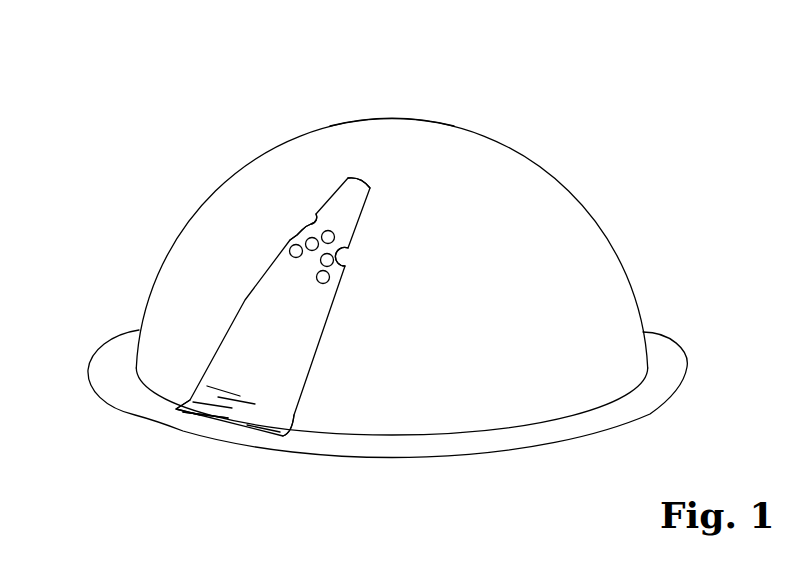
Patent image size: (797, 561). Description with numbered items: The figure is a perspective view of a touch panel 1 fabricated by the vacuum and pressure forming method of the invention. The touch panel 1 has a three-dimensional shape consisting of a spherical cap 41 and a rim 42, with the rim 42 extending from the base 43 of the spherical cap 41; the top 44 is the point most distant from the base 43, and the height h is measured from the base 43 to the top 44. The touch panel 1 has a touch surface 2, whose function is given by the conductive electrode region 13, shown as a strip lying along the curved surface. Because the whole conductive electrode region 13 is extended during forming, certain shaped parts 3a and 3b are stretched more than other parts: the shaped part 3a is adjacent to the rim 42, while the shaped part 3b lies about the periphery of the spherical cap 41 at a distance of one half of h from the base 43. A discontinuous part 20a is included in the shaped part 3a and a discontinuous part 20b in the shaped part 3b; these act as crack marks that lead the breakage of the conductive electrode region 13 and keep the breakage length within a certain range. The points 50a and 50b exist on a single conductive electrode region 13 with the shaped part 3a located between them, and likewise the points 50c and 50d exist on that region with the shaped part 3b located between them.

The touch panel 1 is at (478, 99).
The touch surface 2 is at (314, 291).
The shaped part 3a is at (272, 418).
The shaped part 3b is at (347, 263).
The conductive electrode region 13 is at (250, 315).
The discontinuous part 20a is at (207, 393).
The discontinuous part 20b is at (300, 224).
The spherical cap 41 is at (567, 252).
The rim 42 is at (657, 383).
The base 43 is at (547, 417).
The top 44 is at (387, 116).
The point 50a is at (228, 420).
The point 50b is at (250, 371).
The point 50c is at (293, 285).
The point 50d is at (345, 207).